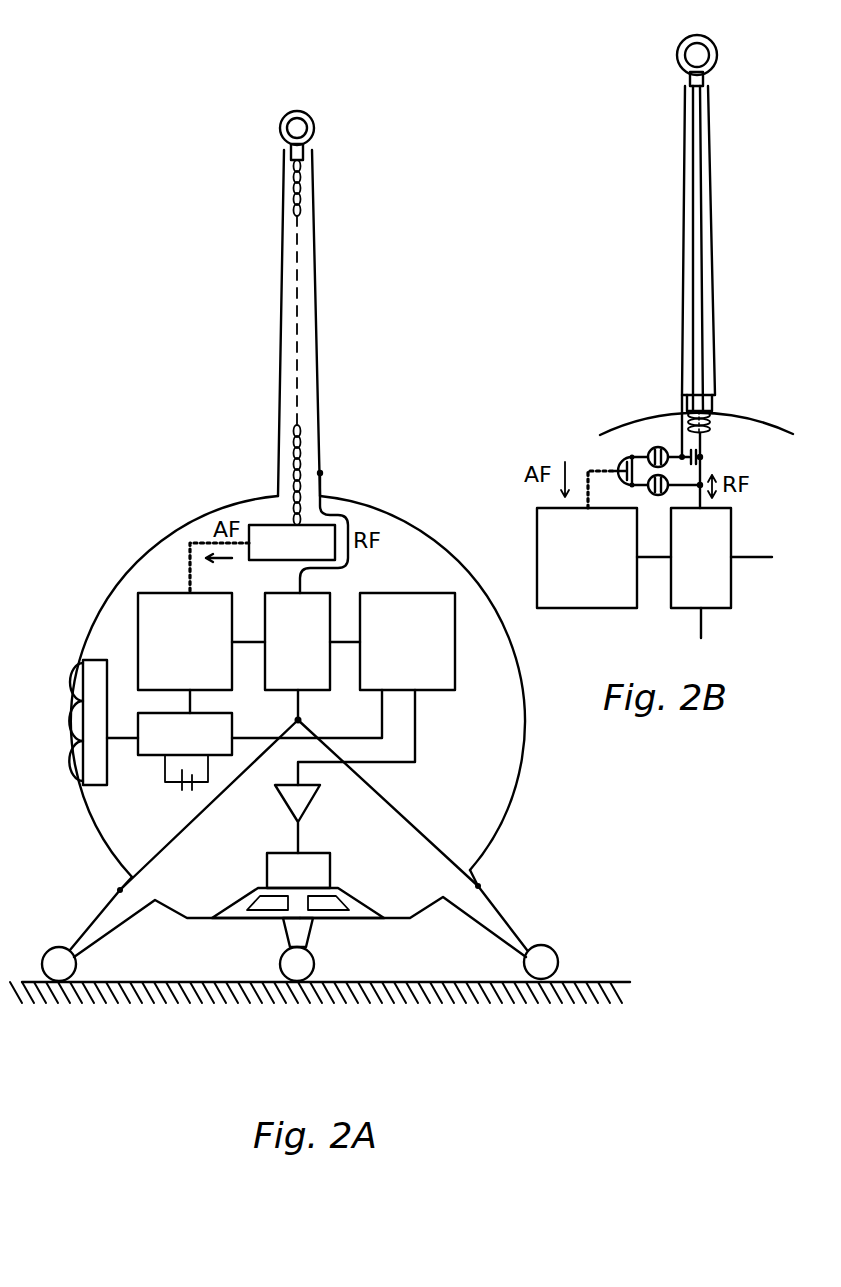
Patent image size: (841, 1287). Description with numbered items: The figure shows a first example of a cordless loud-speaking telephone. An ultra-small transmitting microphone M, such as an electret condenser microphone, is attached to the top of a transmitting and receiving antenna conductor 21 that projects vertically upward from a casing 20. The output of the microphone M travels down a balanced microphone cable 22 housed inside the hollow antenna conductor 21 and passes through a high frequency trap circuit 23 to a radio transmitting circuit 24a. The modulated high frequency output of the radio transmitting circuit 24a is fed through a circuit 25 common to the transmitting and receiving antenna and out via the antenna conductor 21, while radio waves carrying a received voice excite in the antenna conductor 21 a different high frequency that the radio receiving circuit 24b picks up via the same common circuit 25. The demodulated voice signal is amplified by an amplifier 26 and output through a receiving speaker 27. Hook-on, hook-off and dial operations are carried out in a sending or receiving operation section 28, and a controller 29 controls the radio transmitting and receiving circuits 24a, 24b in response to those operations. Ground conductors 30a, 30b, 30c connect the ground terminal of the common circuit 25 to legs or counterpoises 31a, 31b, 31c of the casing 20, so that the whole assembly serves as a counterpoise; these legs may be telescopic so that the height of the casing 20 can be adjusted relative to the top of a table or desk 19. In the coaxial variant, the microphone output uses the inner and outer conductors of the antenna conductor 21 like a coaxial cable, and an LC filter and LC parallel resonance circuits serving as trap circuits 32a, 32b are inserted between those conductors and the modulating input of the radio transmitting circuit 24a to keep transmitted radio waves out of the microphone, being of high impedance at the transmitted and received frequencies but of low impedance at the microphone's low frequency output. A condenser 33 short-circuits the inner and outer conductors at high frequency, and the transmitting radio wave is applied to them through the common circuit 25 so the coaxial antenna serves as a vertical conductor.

In FIG. 2A, the transmitting microphone M is at (301, 121).
In FIG. 2B, the transmitting microphone M is at (703, 50).
In FIG. 2A, the table or desk 19 is at (155, 1003).
In FIG. 2A, the casing 20 is at (510, 746).
In FIG. 2A, the transmitting and receiving antenna conductor 21 is at (317, 357).
In FIG. 2B, the transmitting and receiving antenna conductor 21 is at (714, 250).
In FIG. 2A, the balanced microphone cable 22 is at (290, 300).
In FIG. 2A, the high frequency trap circuit 23 is at (253, 561).
In FIG. 2A, the radio transmitting circuit 24a is at (165, 591).
In FIG. 2B, the radio transmitting circuit 24a is at (596, 600).
In FIG. 2A, the radio receiving circuit 24b is at (412, 585).
In FIG. 2A, the circuit common to the transmitting and receiving antenna 25 is at (308, 684).
In FIG. 2B, the circuit common to the transmitting and receiving antenna 25 is at (722, 532).
In FIG. 2A, the amplifier 26 is at (305, 806).
In FIG. 2A, the receiving speaker 27 is at (358, 919).
In FIG. 2A, the sending or receiving operation section 28 is at (82, 722).
In FIG. 2A, the controller 29 is at (150, 757).
In FIG. 2A, the ground conductor 30a is at (168, 857).
In FIG. 2A, the ground conductor 30b is at (403, 824).
In FIG. 2A, the ground conductor 30c is at (289, 749).
In FIG. 2A, the leg or counterpoise 31a is at (110, 912).
In FIG. 2A, the leg or counterpoise 31b is at (502, 922).
In FIG. 2A, the leg or counterpoise 31c is at (282, 938).
In FIG. 2B, the trap circuit 32a is at (640, 441).
In FIG. 2B, the trap circuit 32b is at (656, 512).
In FIG. 2B, the condenser 33 is at (690, 474).